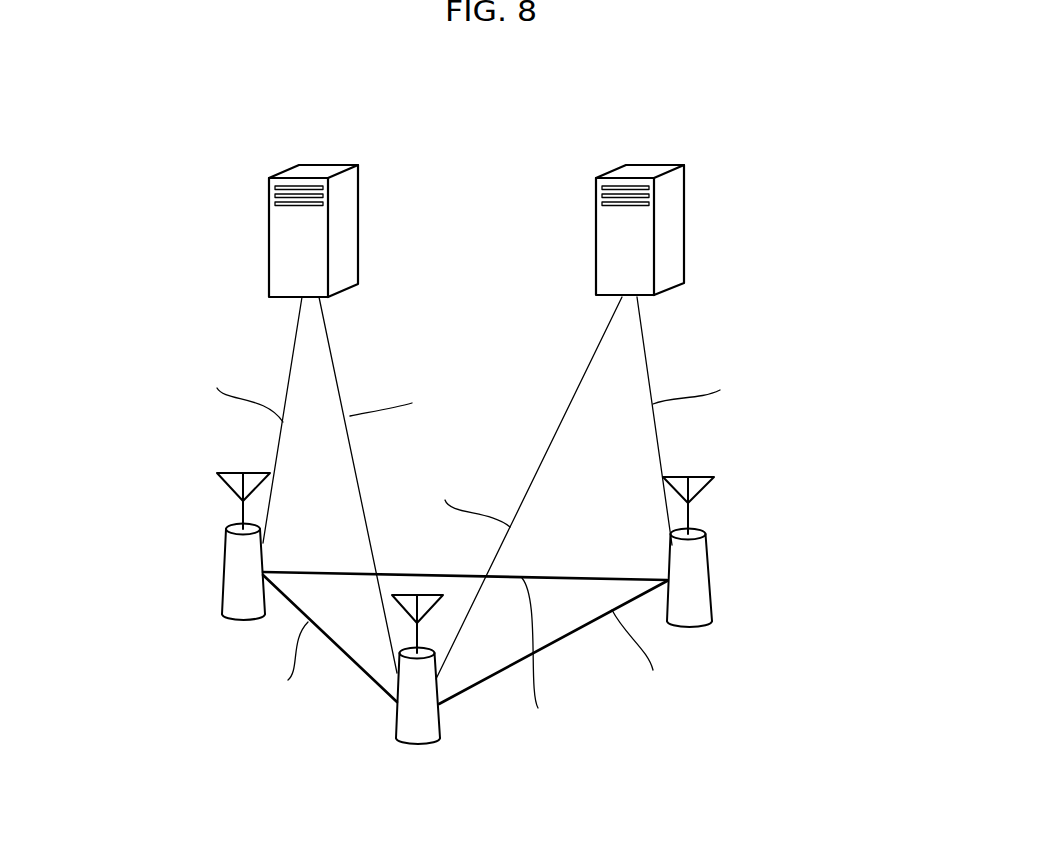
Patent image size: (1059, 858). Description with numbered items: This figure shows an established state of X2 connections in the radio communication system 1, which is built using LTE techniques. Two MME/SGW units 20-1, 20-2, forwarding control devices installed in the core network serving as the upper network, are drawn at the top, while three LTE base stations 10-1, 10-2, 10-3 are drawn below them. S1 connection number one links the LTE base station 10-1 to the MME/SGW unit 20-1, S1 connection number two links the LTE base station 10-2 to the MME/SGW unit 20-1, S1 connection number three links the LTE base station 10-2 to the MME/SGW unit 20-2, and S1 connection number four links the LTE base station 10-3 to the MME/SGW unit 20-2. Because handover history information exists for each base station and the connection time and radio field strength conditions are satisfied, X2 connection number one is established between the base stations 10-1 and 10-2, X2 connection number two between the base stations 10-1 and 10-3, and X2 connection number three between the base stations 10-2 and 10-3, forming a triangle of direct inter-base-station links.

The radio communication system 1 is at (779, 116).
The LTE base station 10-1 is at (224, 567).
The LTE base station 10-2 is at (422, 749).
The LTE base station 10-3 is at (708, 570).
The MME/SGW unit 20-1 is at (320, 164).
The MME/SGW unit 20-2 is at (647, 164).